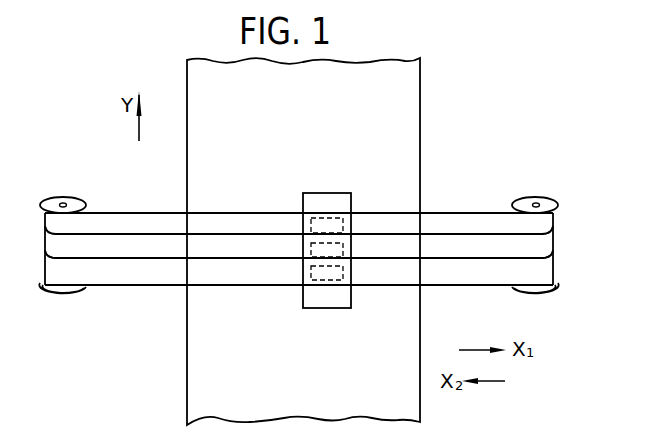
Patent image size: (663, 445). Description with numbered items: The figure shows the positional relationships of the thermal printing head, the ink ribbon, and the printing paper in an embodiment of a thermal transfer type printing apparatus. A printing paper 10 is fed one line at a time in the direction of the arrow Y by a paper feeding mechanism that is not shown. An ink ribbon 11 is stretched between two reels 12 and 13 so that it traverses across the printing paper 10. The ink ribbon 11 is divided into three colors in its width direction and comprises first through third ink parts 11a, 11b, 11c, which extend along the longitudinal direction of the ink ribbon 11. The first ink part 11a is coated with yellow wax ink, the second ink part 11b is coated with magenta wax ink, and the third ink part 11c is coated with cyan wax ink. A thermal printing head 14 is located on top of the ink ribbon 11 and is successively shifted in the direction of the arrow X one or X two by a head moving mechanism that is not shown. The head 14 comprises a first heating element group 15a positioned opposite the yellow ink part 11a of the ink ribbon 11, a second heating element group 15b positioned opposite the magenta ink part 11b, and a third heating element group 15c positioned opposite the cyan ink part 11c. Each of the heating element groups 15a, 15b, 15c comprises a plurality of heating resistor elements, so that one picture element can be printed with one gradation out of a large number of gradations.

The printing paper 10 is at (420, 116).
The ink ribbon 11 is at (299, 249).
The first ink part 11a is at (149, 279).
The second ink part 11b is at (212, 242).
The third ink part 11c is at (146, 220).
The reel 12 is at (70, 199).
The reel 13 is at (544, 199).
The thermal printing head 14 is at (315, 193).
The first heating element group 15a is at (343, 268).
The second heating element group 15b is at (310, 250).
The third heating element group 15c is at (332, 217).